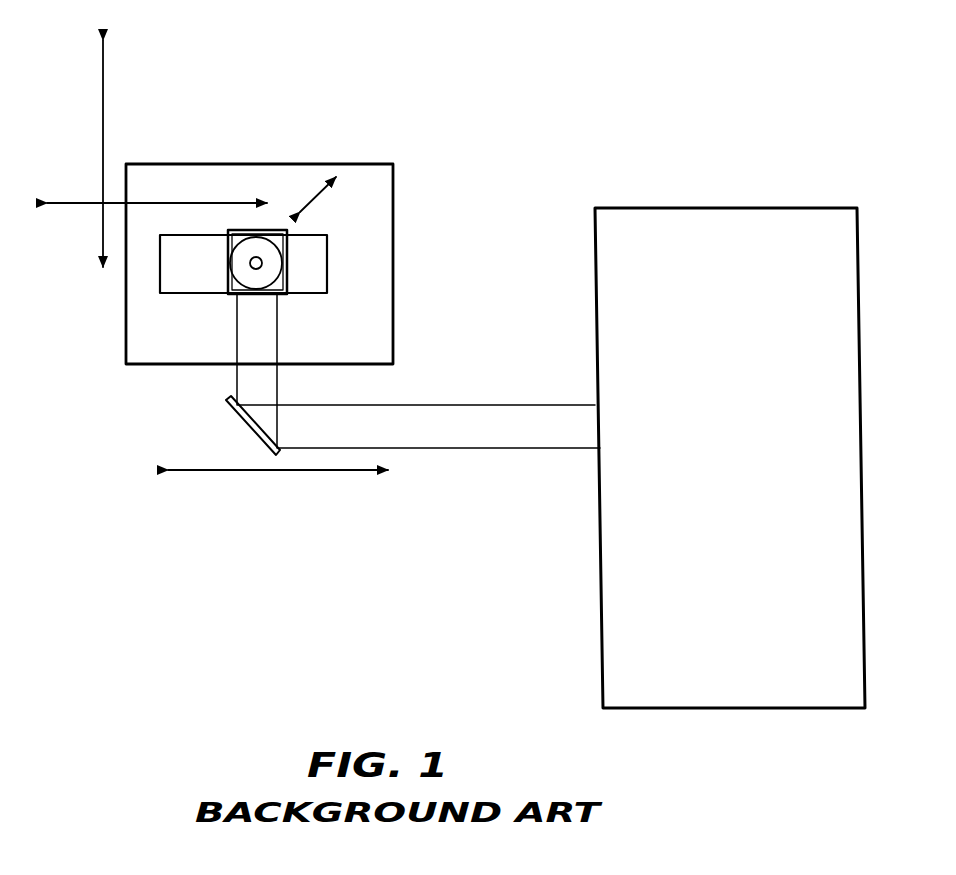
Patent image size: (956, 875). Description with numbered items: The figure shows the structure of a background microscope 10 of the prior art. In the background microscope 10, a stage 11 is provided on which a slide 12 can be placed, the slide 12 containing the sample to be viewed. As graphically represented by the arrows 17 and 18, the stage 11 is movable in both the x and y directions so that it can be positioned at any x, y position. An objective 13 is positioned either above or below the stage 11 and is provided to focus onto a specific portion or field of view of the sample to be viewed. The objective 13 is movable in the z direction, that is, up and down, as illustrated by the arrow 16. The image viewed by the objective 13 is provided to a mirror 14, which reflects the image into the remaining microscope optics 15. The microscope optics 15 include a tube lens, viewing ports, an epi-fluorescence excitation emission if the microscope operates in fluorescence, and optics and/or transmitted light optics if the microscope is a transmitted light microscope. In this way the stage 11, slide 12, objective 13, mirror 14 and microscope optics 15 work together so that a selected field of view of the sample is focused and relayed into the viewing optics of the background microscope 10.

The background microscope 10 is at (190, 125).
The stage 11 is at (140, 352).
The slide 12 is at (173, 273).
The objective 13 is at (275, 257).
The mirror 14 is at (248, 430).
The microscope optics 15 is at (670, 225).
The arrow 16 is at (318, 196).
The arrow 17 is at (103, 124).
The arrow 18 is at (80, 208).